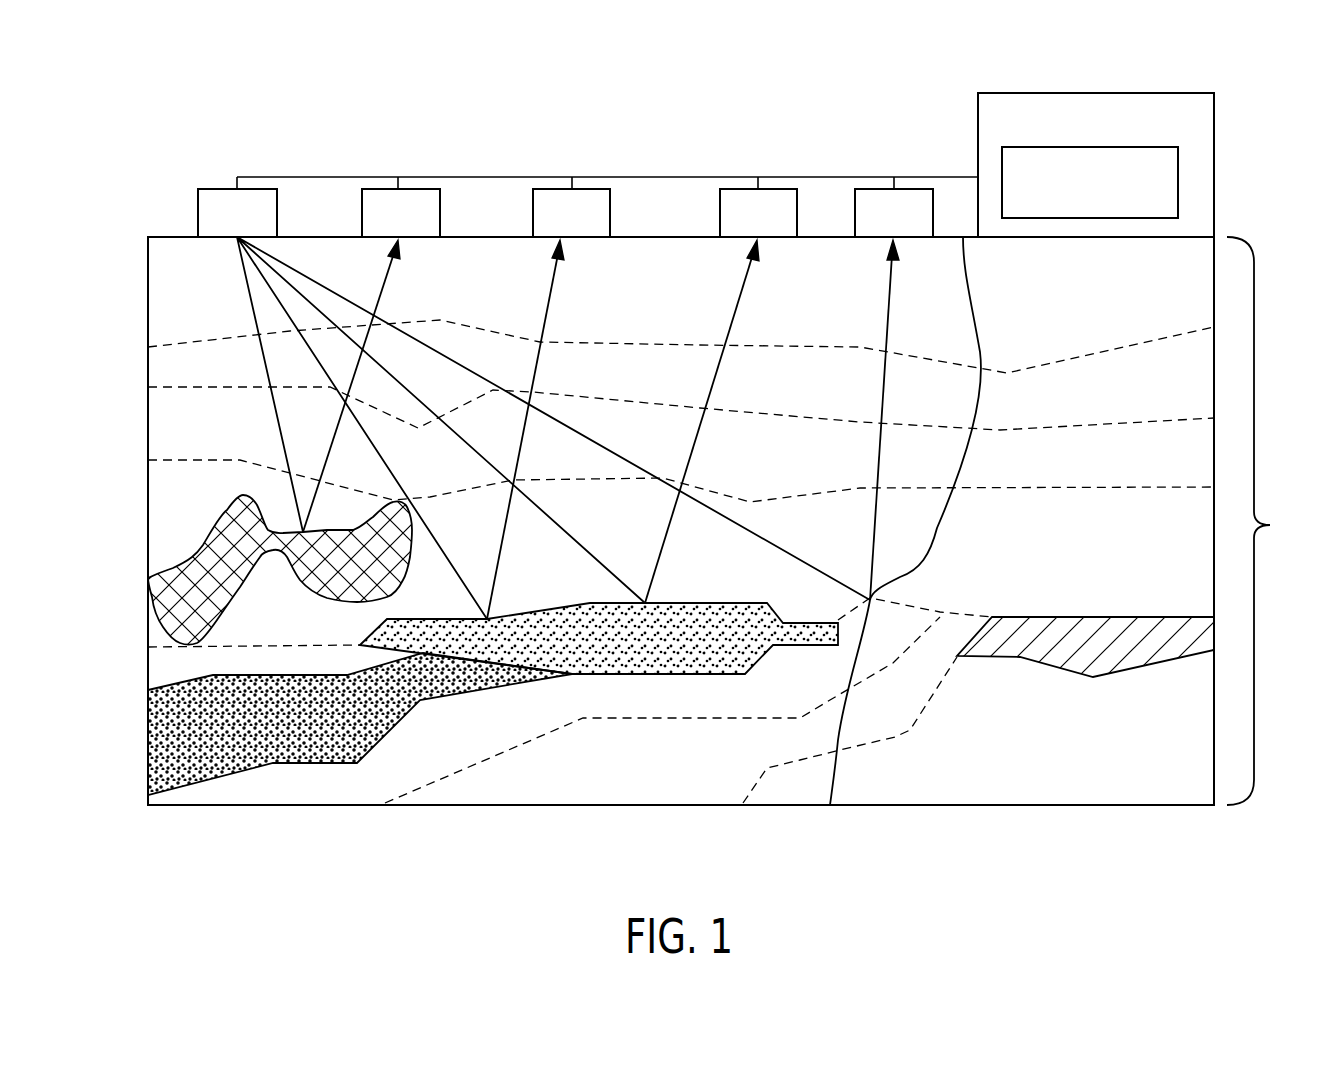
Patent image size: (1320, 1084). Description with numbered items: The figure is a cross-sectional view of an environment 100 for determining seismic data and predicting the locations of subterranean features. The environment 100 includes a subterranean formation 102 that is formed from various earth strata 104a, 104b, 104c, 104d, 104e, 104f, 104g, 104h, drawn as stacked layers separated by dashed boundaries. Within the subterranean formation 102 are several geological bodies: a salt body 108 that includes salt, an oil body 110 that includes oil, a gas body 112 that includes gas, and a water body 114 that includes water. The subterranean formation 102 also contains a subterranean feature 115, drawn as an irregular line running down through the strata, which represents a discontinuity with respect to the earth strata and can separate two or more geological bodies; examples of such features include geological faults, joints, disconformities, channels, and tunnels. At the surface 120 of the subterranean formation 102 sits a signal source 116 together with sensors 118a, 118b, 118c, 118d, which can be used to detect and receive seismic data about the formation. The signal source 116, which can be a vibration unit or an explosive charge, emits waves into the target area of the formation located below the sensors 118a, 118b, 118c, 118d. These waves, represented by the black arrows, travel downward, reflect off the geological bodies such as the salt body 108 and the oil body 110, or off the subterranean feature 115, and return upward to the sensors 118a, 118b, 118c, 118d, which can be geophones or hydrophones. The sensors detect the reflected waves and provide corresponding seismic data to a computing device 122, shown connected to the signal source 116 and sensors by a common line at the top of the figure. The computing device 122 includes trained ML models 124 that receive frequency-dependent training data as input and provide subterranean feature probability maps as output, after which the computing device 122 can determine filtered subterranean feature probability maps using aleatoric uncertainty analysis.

The environment 100 is at (190, 128).
The subterranean formation 102 is at (1270, 525).
The earth stratum 104a is at (166, 313).
The earth stratum 104b is at (166, 373).
The earth stratum 104c is at (166, 447).
The earth stratum 104d is at (166, 524).
The earth stratum 104e is at (166, 660).
The earth stratum 104f is at (287, 793).
The earth stratum 104g is at (617, 793).
The earth stratum 104h is at (995, 792).
The salt body 108 is at (210, 550).
The oil body 110 is at (723, 615).
The gas body 112 is at (1087, 620).
The water body 114 is at (387, 720).
The subterranean feature 115 is at (970, 305).
The signal source 116 is at (220, 229).
The sensor 118a is at (380, 229).
The sensor 118b is at (552, 229).
The sensor 118c is at (738, 229).
The sensor 118d is at (874, 229).
The surface 120 is at (172, 235).
The computing device 122 is at (1070, 134).
The trained ML models 124 is at (1070, 202).